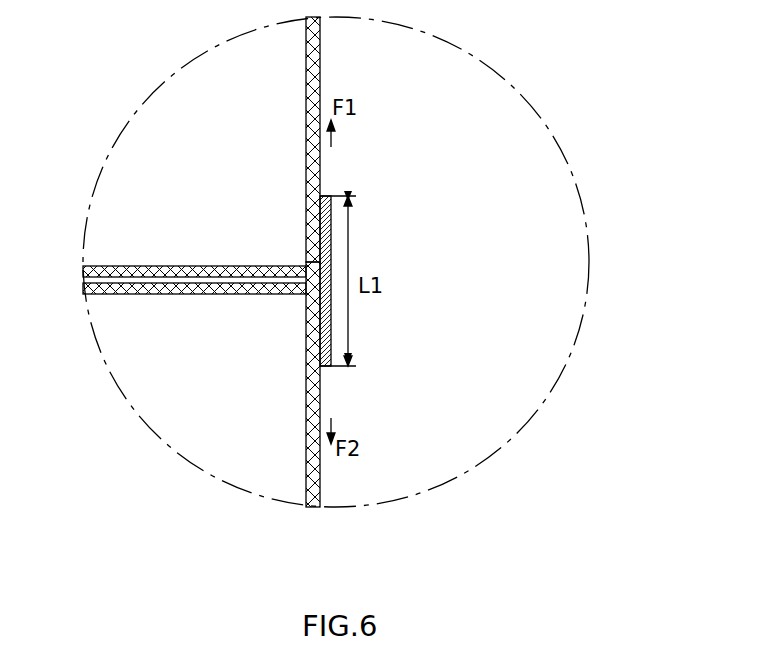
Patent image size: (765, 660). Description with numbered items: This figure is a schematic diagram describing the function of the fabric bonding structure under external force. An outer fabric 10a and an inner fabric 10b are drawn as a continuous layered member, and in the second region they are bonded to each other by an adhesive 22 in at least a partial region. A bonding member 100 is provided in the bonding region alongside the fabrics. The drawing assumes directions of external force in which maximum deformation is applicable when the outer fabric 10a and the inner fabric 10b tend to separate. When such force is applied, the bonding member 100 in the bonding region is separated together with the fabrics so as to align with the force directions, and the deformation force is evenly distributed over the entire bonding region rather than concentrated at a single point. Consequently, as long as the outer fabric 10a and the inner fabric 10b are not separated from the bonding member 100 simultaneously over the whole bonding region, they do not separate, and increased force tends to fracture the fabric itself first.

The outer fabric 10a is at (145, 266).
The inner fabric 10b is at (320, 475).
The adhesive 22 is at (207, 294).
The bonding member 100 is at (331, 243).